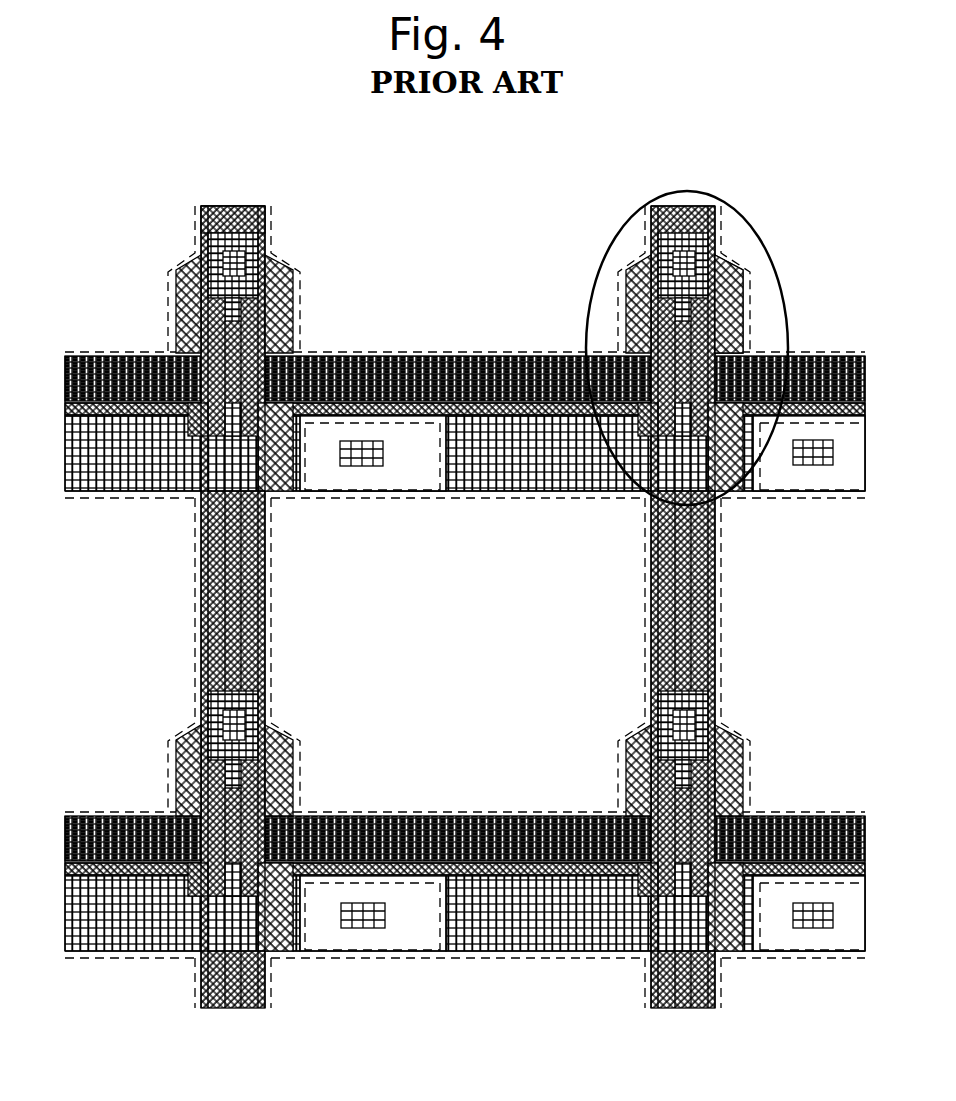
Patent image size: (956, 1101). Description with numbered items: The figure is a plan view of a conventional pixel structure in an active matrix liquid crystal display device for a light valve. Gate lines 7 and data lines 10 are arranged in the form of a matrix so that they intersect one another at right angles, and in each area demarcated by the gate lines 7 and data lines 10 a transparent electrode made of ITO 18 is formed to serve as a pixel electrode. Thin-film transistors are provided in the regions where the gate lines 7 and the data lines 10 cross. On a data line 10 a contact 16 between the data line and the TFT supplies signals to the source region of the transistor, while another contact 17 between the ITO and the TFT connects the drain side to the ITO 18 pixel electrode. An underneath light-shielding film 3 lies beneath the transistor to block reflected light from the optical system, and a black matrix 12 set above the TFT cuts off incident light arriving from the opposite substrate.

The underneath light-shielding film 3 is at (723, 252).
The gate line 7 is at (545, 835).
The data line 10 is at (652, 187).
The black matrix 12 is at (262, 224).
The contact between the data line and the TFT 16 is at (200, 692).
The contact between the ITO and the TFT 17 is at (353, 916).
The transparent electrode made of ITO 18 is at (540, 627).